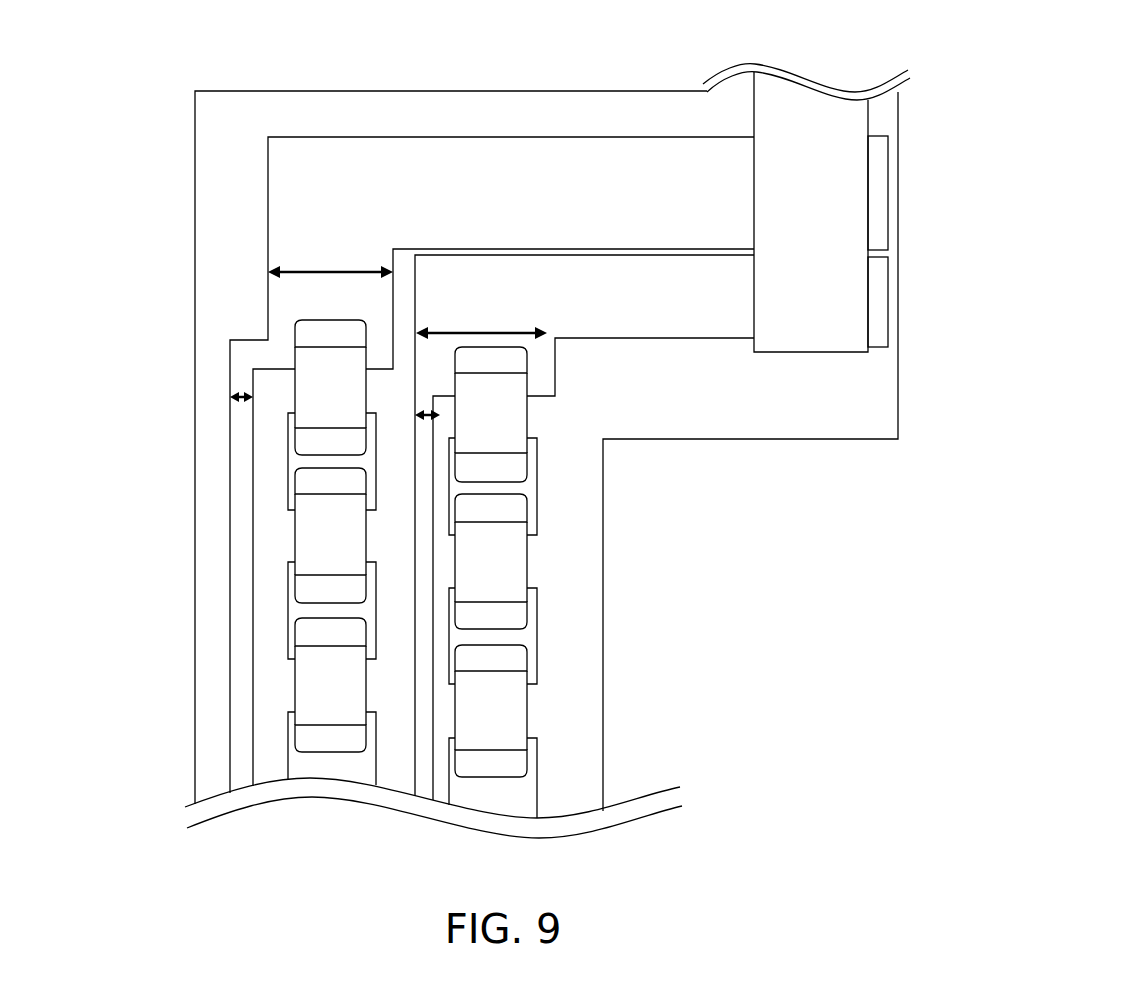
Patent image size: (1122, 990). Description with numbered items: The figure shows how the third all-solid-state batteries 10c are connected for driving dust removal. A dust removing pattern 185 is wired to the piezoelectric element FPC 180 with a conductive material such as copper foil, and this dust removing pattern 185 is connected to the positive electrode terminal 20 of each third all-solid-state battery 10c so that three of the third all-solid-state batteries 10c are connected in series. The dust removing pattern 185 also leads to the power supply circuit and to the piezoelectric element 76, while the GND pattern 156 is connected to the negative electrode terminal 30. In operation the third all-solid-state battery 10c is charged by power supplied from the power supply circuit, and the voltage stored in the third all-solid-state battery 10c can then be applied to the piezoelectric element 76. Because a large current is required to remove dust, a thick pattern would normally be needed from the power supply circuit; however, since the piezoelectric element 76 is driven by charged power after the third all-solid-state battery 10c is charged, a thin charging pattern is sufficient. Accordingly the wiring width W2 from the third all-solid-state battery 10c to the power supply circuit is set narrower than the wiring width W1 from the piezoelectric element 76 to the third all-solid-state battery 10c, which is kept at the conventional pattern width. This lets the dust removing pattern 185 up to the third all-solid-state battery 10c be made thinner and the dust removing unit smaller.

The third all-solid-state battery 10c is at (411, 548).
The positive electrode terminal 20 is at (411, 495).
The negative electrode terminal 30 is at (411, 602).
The piezoelectric element 76 is at (838, 225).
The GND pattern 156 is at (292, 765).
The piezoelectric element FPC 180 is at (838, 418).
The dust removing pattern 185 is at (280, 200).
The wiring width W1 is at (450, 342).
The wiring width W2 is at (425, 418).